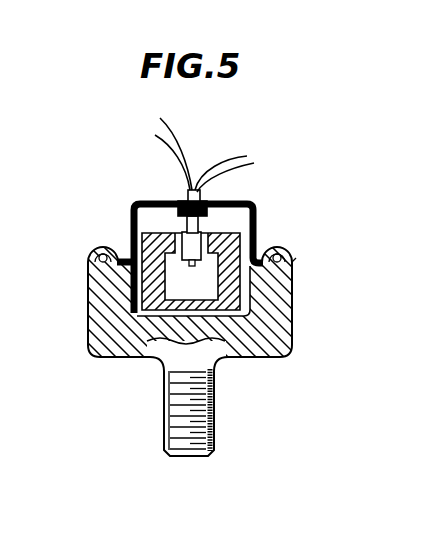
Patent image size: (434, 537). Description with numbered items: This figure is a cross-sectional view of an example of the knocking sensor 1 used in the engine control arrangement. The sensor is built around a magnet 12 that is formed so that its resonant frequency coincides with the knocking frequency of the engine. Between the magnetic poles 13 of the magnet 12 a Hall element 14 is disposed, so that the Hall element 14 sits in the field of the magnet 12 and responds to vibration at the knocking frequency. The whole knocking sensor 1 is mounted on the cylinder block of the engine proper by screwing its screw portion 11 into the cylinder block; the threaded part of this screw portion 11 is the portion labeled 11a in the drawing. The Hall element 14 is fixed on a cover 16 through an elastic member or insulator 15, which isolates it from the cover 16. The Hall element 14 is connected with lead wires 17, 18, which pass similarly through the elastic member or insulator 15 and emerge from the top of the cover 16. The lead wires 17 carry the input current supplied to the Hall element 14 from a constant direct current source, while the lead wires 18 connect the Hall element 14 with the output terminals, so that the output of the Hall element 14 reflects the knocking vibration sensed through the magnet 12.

The knocking sensor 1 is at (297, 260).
The screw portion 11 is at (283, 337).
The threaded shank 11a is at (214, 414).
The magnet 12 is at (225, 288).
The magnetic poles 13 is at (152, 228).
The Hall element 14 is at (189, 263).
The insulator 15 is at (205, 222).
The cover 16 is at (148, 203).
The lead wires 17 is at (243, 158).
The lead wires 18 is at (187, 137).